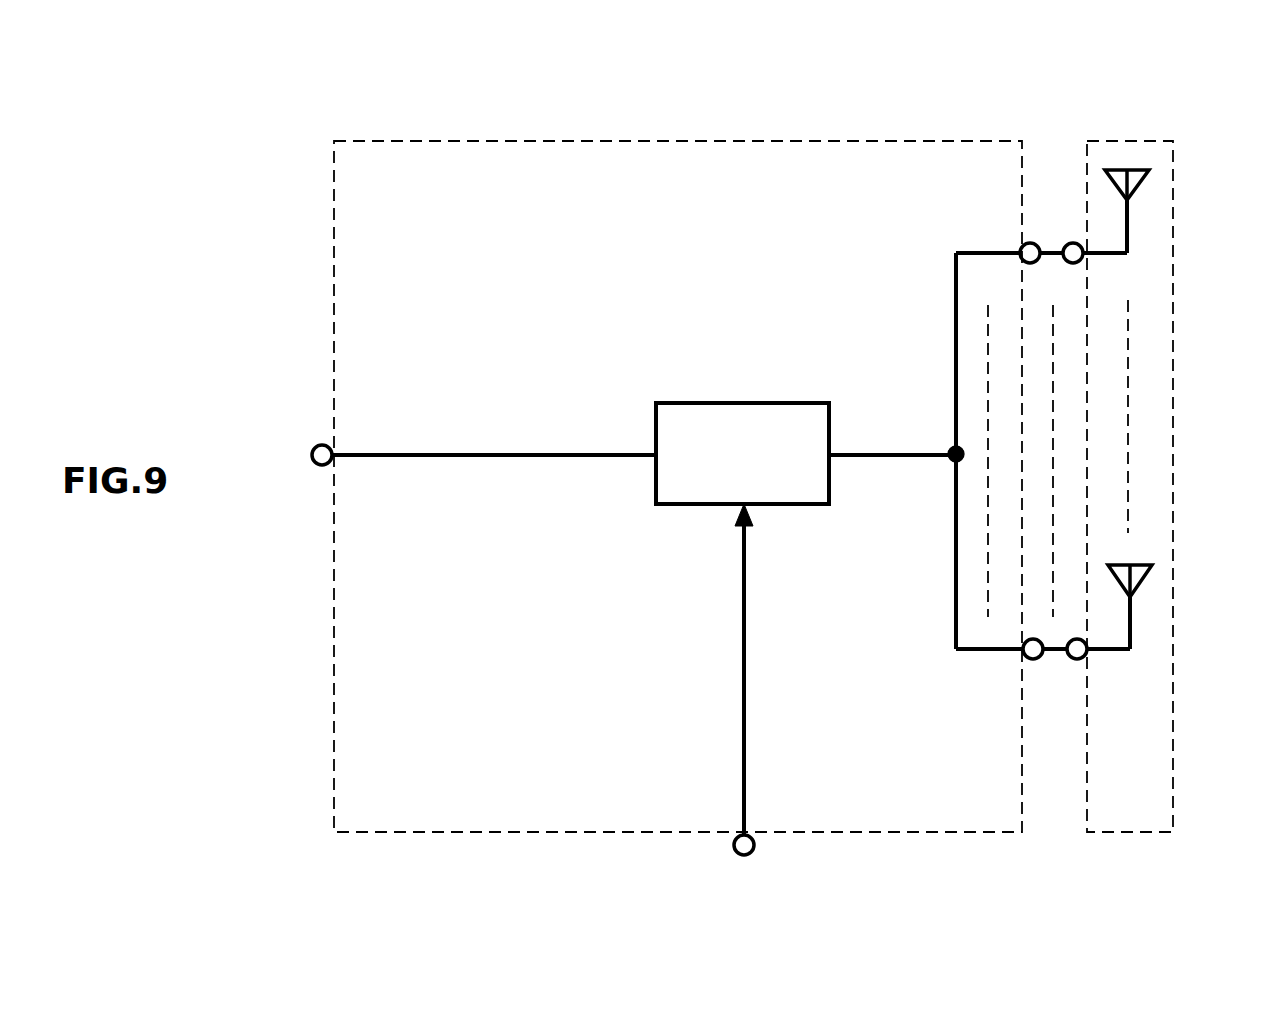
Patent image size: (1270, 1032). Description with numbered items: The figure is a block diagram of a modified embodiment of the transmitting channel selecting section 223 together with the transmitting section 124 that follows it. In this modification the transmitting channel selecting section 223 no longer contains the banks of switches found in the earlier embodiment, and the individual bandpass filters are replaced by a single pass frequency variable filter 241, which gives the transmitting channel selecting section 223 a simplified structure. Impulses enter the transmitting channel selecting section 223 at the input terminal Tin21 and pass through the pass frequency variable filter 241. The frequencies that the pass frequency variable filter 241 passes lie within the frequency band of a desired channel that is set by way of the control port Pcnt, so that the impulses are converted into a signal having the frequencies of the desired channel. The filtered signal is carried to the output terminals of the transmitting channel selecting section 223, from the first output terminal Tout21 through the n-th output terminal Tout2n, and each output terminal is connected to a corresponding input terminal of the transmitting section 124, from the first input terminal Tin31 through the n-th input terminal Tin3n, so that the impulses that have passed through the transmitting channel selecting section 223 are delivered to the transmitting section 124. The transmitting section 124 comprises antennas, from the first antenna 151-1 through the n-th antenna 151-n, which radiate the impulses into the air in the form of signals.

The transmitting channel selecting section 223 is at (482, 140).
The transmitting section 124 is at (1106, 138).
The pass frequency variable filter 241 is at (676, 403).
The antenna 151-1 is at (1126, 190).
The antenna 151-n is at (1143, 582).
The input terminal Tin21 is at (317, 448).
The output terminal Tout21 is at (1027, 245).
The input terminal Tin31 is at (1072, 245).
The output terminal Tout2n is at (1032, 660).
The input terminal Tin3n is at (1075, 660).
The control port Pcnt is at (736, 852).